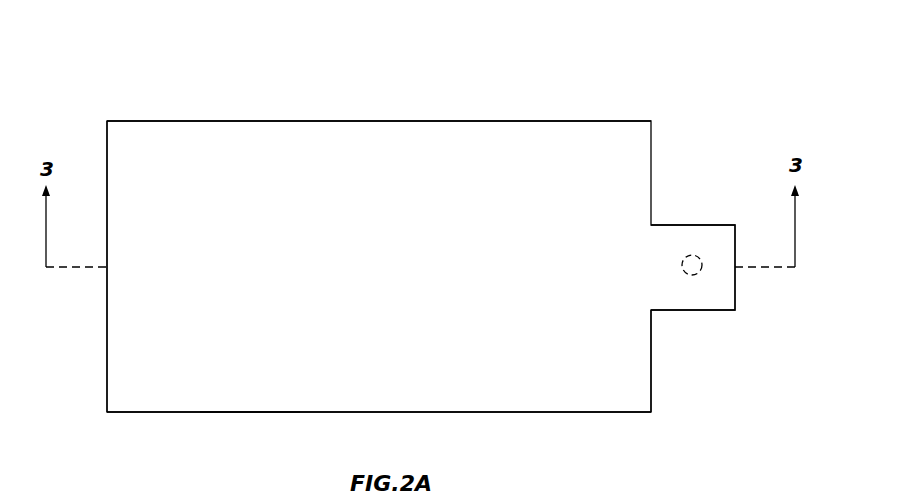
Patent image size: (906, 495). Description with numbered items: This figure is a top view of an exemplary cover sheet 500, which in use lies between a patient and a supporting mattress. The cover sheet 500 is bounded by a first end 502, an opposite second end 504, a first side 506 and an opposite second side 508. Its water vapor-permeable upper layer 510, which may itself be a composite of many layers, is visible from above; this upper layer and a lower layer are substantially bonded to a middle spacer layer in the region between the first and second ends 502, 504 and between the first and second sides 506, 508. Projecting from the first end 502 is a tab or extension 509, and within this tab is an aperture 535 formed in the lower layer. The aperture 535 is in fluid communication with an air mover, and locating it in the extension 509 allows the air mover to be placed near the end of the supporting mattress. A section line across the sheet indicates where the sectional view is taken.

The cover sheet 500 is at (350, 66).
The first end 502 is at (652, 378).
The second end 504 is at (106, 331).
The first side 506 is at (385, 413).
The second side 508 is at (243, 120).
The tab or extension 509 is at (692, 225).
The water vapor-permeable upper layer 510 is at (238, 390).
The aperture 535 is at (697, 278).